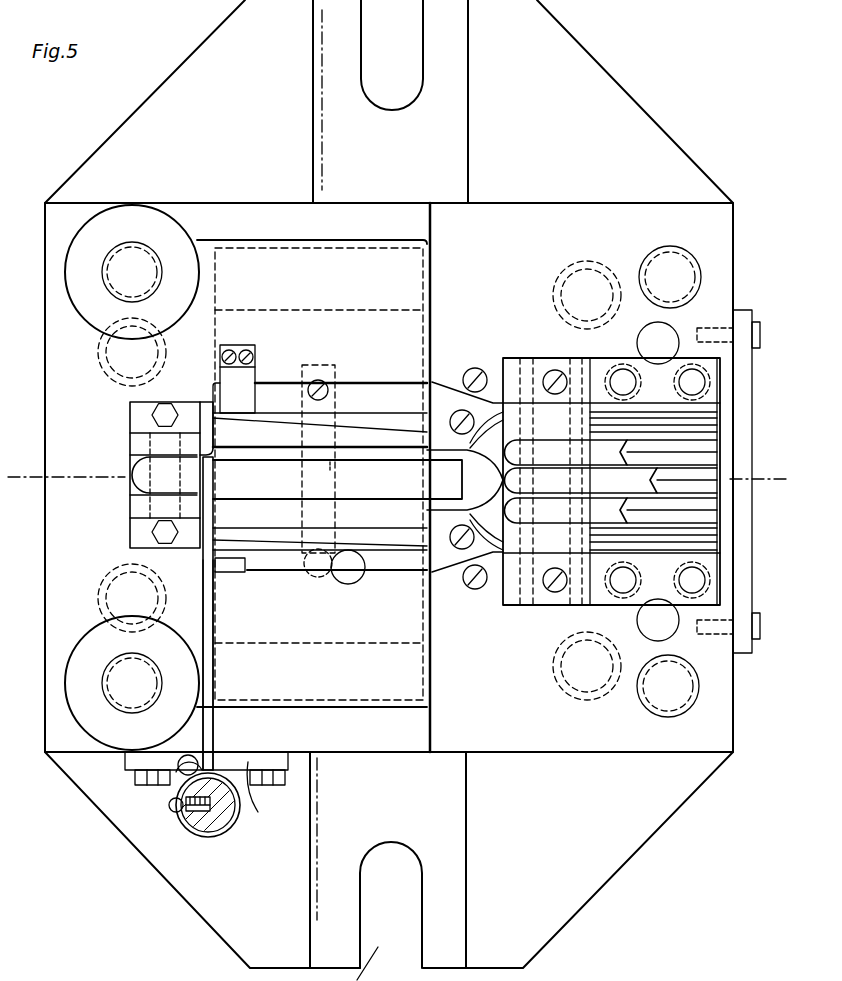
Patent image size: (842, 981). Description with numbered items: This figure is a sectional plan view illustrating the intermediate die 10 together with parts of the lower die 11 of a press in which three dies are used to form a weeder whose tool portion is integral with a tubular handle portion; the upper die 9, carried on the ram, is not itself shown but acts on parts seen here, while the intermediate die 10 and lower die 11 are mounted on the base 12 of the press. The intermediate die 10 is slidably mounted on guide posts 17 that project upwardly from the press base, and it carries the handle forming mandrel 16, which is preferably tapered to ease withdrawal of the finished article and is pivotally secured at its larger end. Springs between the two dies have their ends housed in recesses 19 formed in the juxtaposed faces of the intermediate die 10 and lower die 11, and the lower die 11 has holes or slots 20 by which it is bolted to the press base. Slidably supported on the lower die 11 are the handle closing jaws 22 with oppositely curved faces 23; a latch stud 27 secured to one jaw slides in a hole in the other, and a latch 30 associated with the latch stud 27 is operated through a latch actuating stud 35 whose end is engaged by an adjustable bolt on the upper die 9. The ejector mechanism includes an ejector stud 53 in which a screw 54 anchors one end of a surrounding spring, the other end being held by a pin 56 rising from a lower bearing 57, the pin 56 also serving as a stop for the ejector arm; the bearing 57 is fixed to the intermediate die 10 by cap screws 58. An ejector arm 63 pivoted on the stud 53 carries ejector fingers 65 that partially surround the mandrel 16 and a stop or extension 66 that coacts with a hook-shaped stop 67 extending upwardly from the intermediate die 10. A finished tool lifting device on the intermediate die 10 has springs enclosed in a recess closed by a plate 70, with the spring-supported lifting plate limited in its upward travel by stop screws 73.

The upper die 9 is at (320, 37).
The intermediate die 10 is at (665, 220).
The lower die 11 is at (612, 113).
The base 12 is at (25, 480).
The handle forming mandrel 16 is at (286, 463).
The guide posts 17 is at (118, 268).
The recesses 19 is at (105, 368).
The holes or slots 20 is at (382, 72).
The handle closing jaws 22 is at (398, 308).
The oppositely curved faces 23 is at (678, 266).
The latch stud 27 is at (312, 362).
The latch 30 is at (310, 578).
The latch actuating stud 35 is at (352, 582).
The ejector stud 53 is at (222, 828).
The screw 54 is at (173, 812).
The pin 56 is at (182, 783).
The lower bearing 57 is at (262, 798).
The cap screws 58 is at (268, 785).
The ejector arm 63 is at (205, 592).
The ejector fingers 65 is at (216, 490).
The stop or extension 66 is at (228, 572).
The hook-shaped stop 67 is at (232, 390).
The plate 70 is at (745, 382).
The stop screws 73 is at (666, 337).